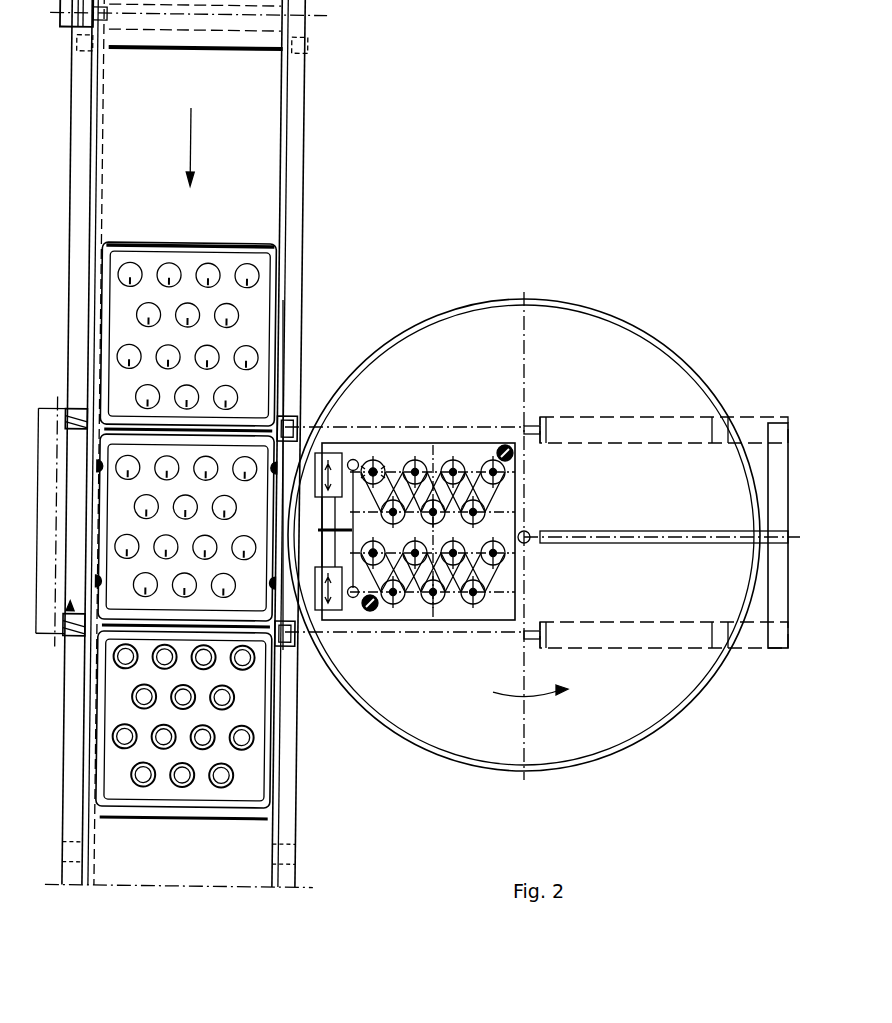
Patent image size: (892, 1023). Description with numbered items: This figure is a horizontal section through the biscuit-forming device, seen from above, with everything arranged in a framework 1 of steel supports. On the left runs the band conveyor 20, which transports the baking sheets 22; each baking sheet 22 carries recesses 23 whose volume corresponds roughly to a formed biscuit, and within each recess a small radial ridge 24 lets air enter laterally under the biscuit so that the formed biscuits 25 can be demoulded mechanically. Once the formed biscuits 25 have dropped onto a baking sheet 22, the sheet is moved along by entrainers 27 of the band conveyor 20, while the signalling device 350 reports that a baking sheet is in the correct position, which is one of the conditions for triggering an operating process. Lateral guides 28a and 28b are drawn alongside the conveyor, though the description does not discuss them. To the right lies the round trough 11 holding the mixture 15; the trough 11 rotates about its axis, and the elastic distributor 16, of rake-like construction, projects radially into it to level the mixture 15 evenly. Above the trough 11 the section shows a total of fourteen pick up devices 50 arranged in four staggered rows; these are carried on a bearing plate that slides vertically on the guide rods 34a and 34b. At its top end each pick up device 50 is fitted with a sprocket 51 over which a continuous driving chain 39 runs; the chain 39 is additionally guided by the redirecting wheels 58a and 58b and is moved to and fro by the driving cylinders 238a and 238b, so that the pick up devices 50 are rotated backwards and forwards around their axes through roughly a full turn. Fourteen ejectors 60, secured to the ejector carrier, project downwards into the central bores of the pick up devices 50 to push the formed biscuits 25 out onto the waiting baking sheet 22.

The framework 1 is at (303, 100).
The trough 11 is at (592, 757).
The mixture 15 is at (507, 735).
The elastic distributor 16 is at (672, 535).
The band conveyor 20 is at (252, 146).
The baking sheet 22 is at (228, 268).
The recess 23 is at (166, 273).
The ridge 24 is at (247, 282).
The formed biscuit 25 is at (217, 775).
The entrainer 27 is at (253, 246).
The left guide 28a is at (85, 457).
The right guide 28b is at (306, 430).
The guide rod 34a is at (373, 612).
The guide rod 34b is at (503, 450).
The continuous driving chain 39 is at (528, 527).
The pick up device 50 is at (470, 605).
The sprocket 51 is at (371, 464).
The redirecting wheel 58a is at (352, 598).
The redirecting wheel 58b is at (357, 462).
The ejector 60 is at (447, 460).
The driving cylinder 238a is at (320, 612).
The driving cylinder 238b is at (340, 452).
The signalling device 350 is at (56, 672).